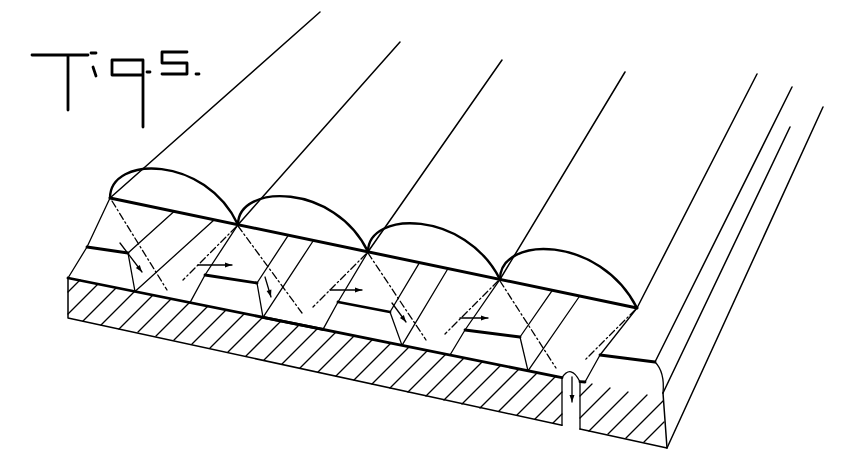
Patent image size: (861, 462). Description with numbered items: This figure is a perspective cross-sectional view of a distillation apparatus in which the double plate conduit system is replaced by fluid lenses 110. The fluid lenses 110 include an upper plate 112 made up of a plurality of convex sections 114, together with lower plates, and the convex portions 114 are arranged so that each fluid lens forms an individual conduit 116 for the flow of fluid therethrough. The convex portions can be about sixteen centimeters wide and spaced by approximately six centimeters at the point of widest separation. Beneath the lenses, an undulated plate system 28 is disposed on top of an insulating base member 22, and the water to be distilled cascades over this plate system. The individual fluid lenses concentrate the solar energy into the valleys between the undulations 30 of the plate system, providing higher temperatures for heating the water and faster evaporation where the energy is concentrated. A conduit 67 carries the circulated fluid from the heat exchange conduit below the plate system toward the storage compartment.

The fluid lenses 110 is at (656, 91).
The upper plate 112 is at (700, 163).
The convex sections 114 is at (600, 131).
The individual conduit 116 is at (412, 232).
The undulated plate system 28 is at (90, 228).
The insulating base member 22 is at (163, 312).
The undulations 30 is at (277, 256).
The conduit 67 is at (570, 430).